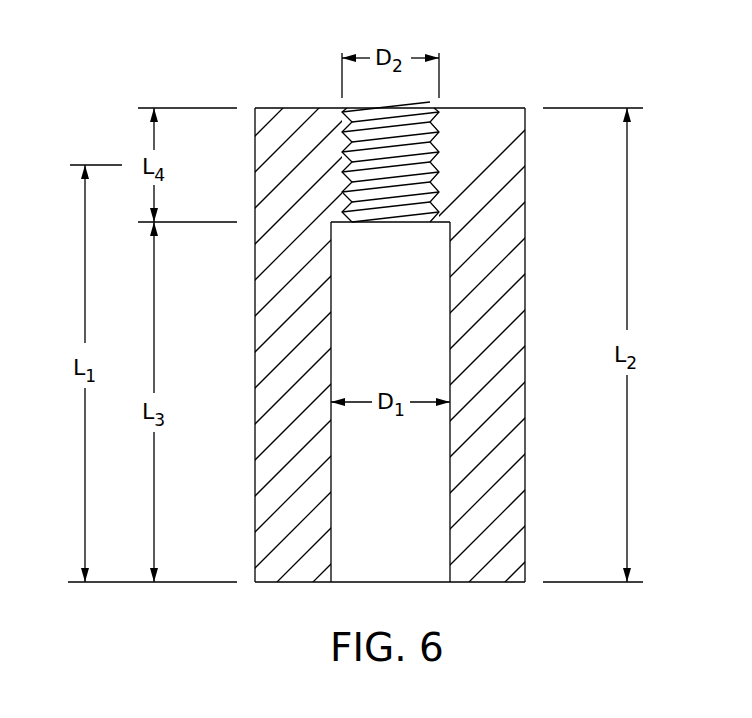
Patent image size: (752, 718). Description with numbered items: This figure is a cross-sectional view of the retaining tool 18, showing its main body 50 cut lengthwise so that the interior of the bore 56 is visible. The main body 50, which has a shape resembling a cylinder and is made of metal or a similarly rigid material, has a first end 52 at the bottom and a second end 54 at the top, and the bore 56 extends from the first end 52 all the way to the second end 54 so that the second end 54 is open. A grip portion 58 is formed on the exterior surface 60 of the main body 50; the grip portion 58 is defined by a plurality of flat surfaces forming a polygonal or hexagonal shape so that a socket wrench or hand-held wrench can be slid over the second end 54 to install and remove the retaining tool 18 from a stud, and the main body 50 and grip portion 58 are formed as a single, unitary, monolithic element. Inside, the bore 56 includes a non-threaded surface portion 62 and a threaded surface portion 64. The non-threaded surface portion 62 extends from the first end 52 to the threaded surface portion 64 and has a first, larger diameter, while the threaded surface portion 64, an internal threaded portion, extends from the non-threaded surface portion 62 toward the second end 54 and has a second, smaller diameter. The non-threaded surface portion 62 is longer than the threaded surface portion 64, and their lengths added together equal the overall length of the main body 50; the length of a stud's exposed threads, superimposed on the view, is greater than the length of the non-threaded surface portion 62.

The retaining tool 18 is at (238, 48).
The main body 50 is at (483, 212).
The first end 52 is at (482, 583).
The second end 54 is at (480, 108).
The bore 56 is at (450, 541).
The grip portion 58 is at (525, 283).
The exterior surface 60 is at (525, 460).
The non-threaded surface portion 62 is at (331, 513).
The threaded surface portion 64 is at (353, 175).